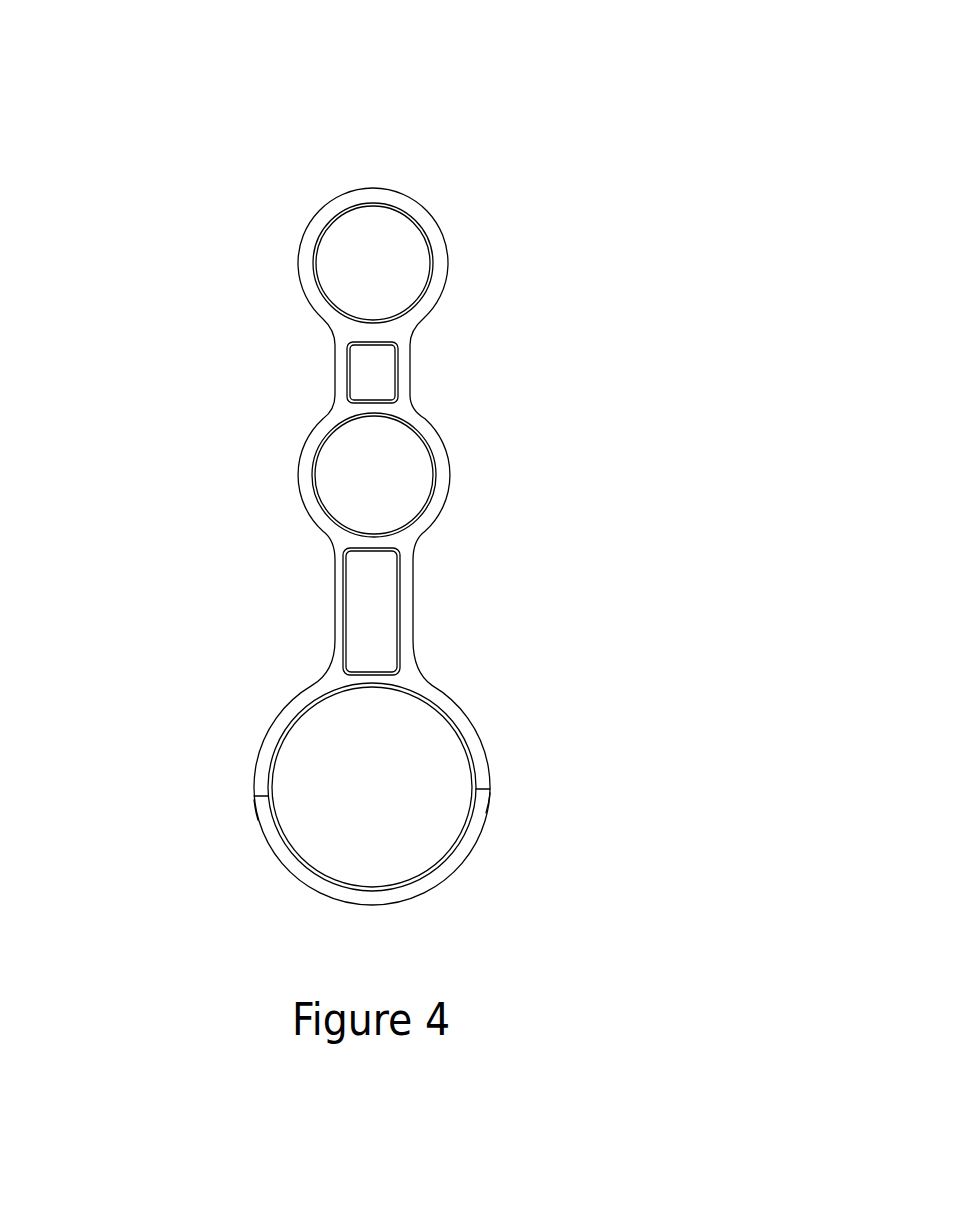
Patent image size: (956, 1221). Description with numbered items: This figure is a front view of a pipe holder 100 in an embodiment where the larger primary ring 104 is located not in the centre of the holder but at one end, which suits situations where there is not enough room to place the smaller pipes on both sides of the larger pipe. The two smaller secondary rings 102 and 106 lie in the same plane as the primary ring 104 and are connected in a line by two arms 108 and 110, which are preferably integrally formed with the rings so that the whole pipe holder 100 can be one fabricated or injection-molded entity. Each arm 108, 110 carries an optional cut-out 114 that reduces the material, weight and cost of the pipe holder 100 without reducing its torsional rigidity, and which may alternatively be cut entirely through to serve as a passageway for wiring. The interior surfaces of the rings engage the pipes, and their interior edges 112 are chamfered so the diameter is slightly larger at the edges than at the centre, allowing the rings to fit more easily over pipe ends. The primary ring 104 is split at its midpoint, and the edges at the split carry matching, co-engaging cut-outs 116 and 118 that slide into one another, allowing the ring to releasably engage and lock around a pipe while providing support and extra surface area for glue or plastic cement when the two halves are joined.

The pipe holder 100 is at (432, 103).
The secondary ring 102 is at (472, 454).
The primary ring 104 is at (490, 715).
The secondary ring 106 is at (464, 235).
The arm 108 is at (316, 350).
The arm 110 is at (319, 575).
The interior edge 112 is at (305, 212).
The cut-out 114 is at (329, 387).
The cut-out 116 is at (511, 773).
The cut-out 118 is at (506, 805).